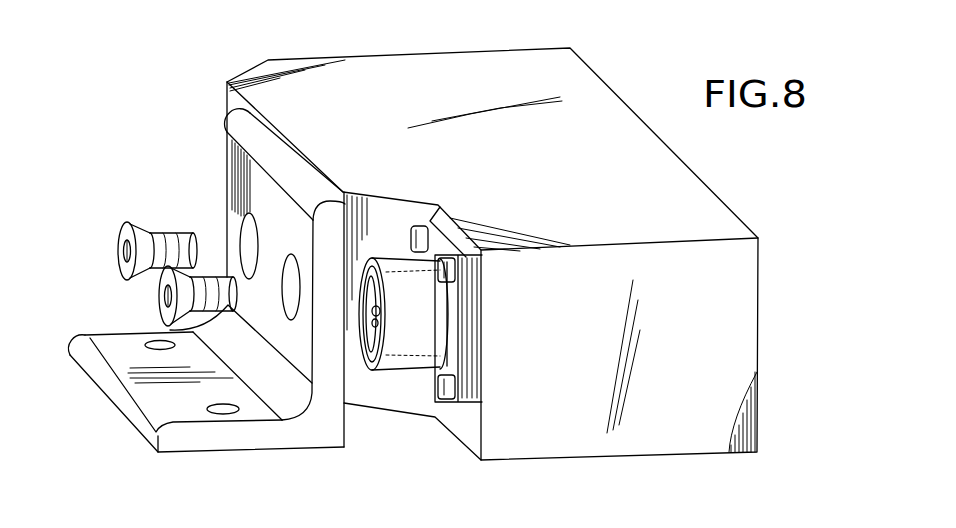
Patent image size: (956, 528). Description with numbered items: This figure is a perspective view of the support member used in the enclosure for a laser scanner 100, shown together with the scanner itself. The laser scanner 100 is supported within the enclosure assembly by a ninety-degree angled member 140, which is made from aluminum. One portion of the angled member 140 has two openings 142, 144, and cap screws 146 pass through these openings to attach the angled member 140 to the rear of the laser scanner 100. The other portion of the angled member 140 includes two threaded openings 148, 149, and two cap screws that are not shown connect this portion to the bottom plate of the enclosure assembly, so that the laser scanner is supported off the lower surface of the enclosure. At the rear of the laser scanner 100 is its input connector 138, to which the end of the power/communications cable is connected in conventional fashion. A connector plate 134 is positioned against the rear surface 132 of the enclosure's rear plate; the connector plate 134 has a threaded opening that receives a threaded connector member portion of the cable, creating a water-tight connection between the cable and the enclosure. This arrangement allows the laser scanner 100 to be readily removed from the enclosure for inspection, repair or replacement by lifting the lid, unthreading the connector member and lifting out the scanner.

The laser scanner 100 is at (618, 94).
The rear surface 132 is at (452, 420).
The connector plate 134 is at (470, 403).
The input connector 138 is at (407, 372).
The angled member 140 is at (205, 122).
The opening 142 is at (224, 209).
The opening 144 is at (297, 268).
The cap screws 146 is at (122, 225).
The threaded opening 148 is at (150, 347).
The threaded opening 149 is at (240, 413).